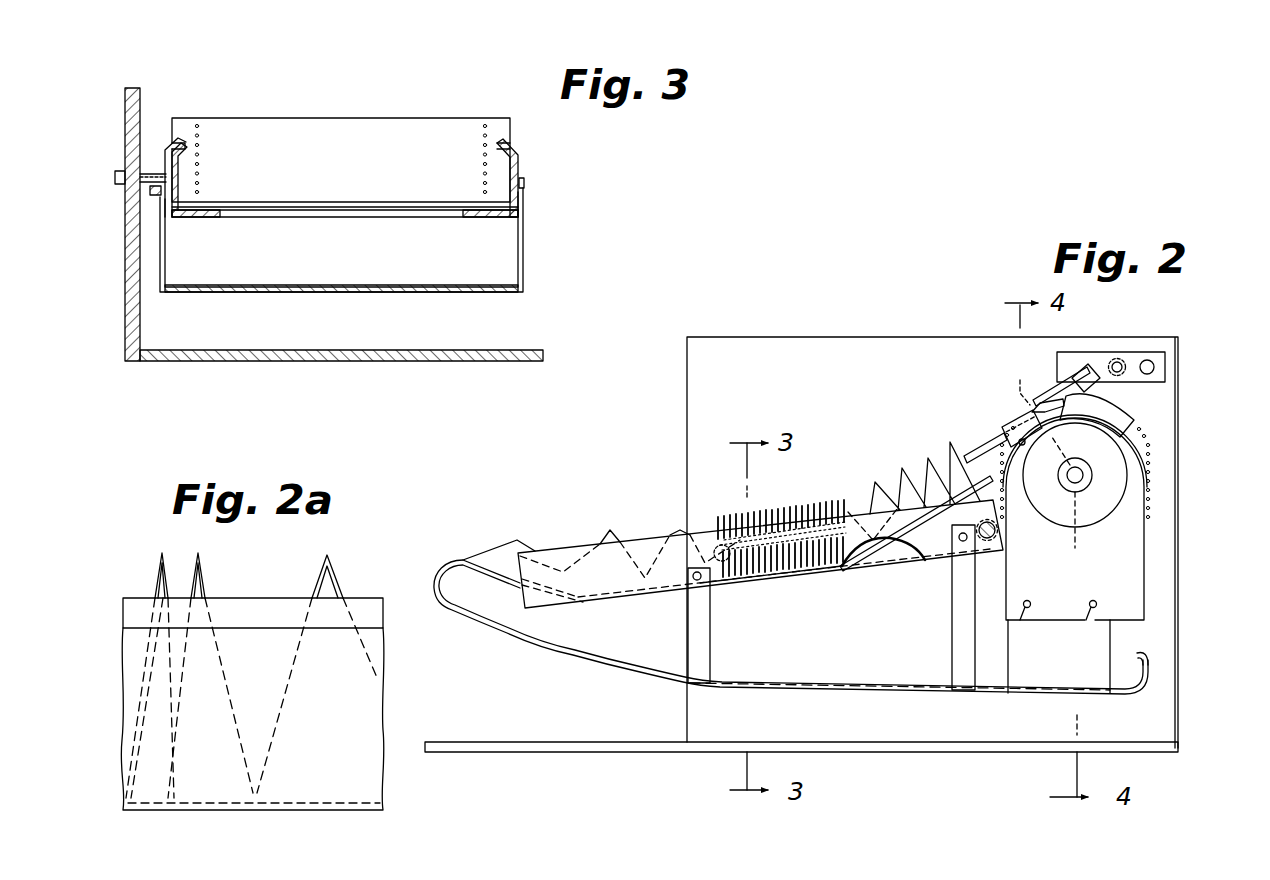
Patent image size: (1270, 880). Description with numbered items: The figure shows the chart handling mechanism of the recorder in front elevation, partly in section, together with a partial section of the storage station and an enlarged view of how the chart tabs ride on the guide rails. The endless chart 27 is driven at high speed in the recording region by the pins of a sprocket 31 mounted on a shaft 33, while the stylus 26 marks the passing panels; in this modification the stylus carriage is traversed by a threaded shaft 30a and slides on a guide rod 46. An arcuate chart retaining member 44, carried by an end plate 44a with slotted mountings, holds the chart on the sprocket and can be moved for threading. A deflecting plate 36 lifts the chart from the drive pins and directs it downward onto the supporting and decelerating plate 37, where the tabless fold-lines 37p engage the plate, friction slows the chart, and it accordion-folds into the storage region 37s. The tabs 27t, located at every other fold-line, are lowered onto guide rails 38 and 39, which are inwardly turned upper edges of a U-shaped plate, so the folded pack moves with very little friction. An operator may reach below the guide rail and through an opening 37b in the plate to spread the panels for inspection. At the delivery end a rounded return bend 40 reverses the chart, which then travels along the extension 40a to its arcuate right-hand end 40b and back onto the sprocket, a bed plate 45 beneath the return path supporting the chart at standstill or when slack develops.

In FIG. 2, the stylus 26 is at (1047, 396).
In FIG. 3, the chart 27 is at (293, 118).
In FIG. 2, the chart 27 is at (500, 545).
In FIG. 3, the tabs 27t is at (179, 136).
In FIG. 2A, the tabs 27t is at (336, 575).
In FIG. 2, the threaded shaft 30a is at (1119, 360).
In FIG. 2, the sprocket 31 is at (1150, 450).
In FIG. 2, the shaft 33 is at (1082, 481).
In FIG. 2, the deflecting plate 36 is at (977, 452).
In FIG. 3, the supporting and decelerating plate 37 is at (500, 213).
In FIG. 2A, the supporting and decelerating plate 37 is at (282, 812).
In FIG. 2, the supporting and decelerating plate 37 is at (960, 473).
In FIG. 3, the opening 37b is at (340, 210).
In FIG. 2, the opening 37b is at (802, 568).
In FIG. 2A, the fold-lines 37p is at (170, 800).
In FIG. 2, the storage region 37s is at (847, 507).
In FIG. 3, the guide rail 38 is at (512, 150).
In FIG. 2A, the guide rail 38 is at (133, 608).
In FIG. 2, the guide rail 38 is at (637, 541).
In FIG. 3, the guide rail 39 is at (168, 147).
In FIG. 2, the return bend 40 is at (438, 590).
In FIG. 3, the extension 40a is at (382, 291).
In FIG. 2, the extension 40a is at (882, 690).
In FIG. 2, the right-hand end 40b is at (1152, 678).
In FIG. 2, the chart retaining member 44 is at (1105, 410).
In FIG. 2, the end plate 44a is at (1045, 622).
In FIG. 3, the bed plate 45 is at (448, 352).
In FIG. 2, the bed plate 45 is at (553, 752).
In FIG. 2, the guide rod 46 is at (1154, 366).